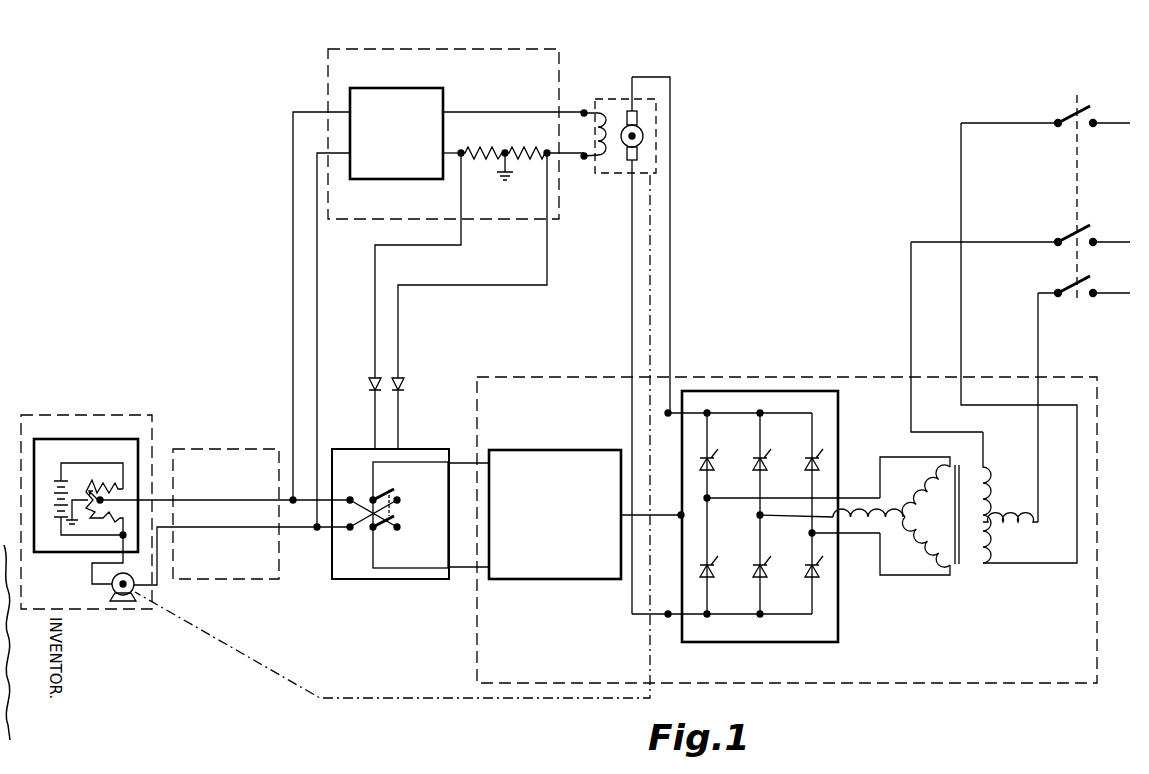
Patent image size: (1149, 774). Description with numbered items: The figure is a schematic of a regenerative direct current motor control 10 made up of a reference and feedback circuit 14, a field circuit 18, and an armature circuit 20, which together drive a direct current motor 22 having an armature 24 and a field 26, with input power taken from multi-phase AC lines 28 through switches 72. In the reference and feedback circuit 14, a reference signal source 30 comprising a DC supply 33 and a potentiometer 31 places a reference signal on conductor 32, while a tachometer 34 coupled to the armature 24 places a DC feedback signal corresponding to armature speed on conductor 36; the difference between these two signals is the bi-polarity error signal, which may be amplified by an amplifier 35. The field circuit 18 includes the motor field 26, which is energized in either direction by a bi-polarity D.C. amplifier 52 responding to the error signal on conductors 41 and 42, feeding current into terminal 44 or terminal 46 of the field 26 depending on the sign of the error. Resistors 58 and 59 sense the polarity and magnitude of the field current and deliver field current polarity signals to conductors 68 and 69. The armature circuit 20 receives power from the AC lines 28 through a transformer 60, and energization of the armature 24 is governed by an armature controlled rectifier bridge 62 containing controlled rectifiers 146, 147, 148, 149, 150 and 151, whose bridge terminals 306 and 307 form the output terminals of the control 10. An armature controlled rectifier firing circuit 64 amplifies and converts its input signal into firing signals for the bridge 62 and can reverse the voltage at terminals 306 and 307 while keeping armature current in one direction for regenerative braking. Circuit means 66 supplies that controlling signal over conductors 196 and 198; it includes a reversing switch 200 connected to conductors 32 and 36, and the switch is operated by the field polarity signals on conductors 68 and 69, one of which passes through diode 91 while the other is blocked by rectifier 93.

The regenerative direct current motor control 10 is at (148, 300).
The reference and feedback circuit 14 is at (85, 415).
The field circuit 18 is at (432, 49).
The armature circuit 20 is at (922, 686).
The direct current motor 22 is at (622, 96).
The armature 24 is at (634, 134).
The motor field 26 is at (612, 162).
The multi-phase AC lines 28 is at (1123, 116).
The reference signal source 30 is at (89, 439).
The potentiometer 31 is at (96, 503).
The conductor 32 is at (236, 497).
The DC supply 33 is at (57, 478).
The tachometer 34 is at (112, 593).
The amplifier 35 is at (205, 449).
The conductor 36 is at (253, 523).
The conductor 41 is at (304, 306).
The conductor 42 is at (333, 340).
The terminal 44 is at (584, 110).
The terminal 46 is at (584, 158).
The bi-polarity DC amplifier 52 is at (393, 88).
The resistor 58 is at (480, 150).
The resistor 59 is at (520, 150).
The transformer 60 is at (958, 570).
The armature controlled rectifier bridge 62 is at (838, 617).
The armature controlled rectifier firing circuit 64 is at (559, 580).
The circuit means 66 is at (375, 580).
The conductor 68 is at (468, 285).
The conductor 69 is at (375, 263).
The line switches 72 is at (1070, 118).
The diode 91 is at (402, 376).
The rectifier 93 is at (370, 376).
The controlled rectifier 146 is at (711, 470).
The controlled rectifier 147 is at (711, 577).
The controlled rectifier 148 is at (764, 470).
The controlled rectifier 149 is at (764, 577).
The controlled rectifier 150 is at (806, 463).
The controlled rectifier 151 is at (806, 570).
The conductor 196 is at (463, 459).
The conductor 198 is at (463, 572).
The reversing switch 200 is at (357, 498).
The bridge terminal 306 is at (670, 412).
The bridge terminal 307 is at (670, 617).